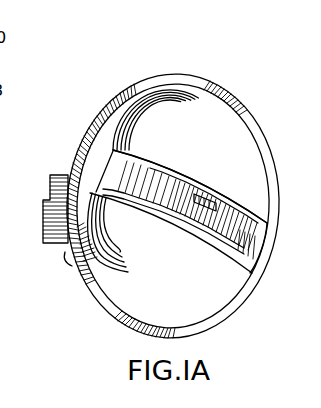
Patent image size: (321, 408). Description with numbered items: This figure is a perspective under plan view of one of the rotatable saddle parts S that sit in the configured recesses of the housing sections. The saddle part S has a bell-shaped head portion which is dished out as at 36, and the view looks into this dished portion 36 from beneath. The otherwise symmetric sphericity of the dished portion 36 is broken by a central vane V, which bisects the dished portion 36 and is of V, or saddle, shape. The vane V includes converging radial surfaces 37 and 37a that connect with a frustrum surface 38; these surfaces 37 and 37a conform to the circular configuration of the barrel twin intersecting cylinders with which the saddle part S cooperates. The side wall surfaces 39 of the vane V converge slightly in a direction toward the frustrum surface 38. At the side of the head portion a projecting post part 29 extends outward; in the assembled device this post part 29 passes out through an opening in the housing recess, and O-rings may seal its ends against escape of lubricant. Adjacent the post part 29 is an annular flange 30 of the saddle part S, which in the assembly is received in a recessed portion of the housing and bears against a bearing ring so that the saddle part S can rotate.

The saddle part S is at (197, 73).
The central vane V is at (206, 184).
The dished portion 36 is at (208, 115).
The converging radial surface 37 is at (146, 172).
The converging radial surface 37a is at (245, 226).
The frustrum surface 38 is at (192, 228).
The side wall surfaces 39 is at (191, 183).
The projecting post part 29 is at (62, 175).
The annular flange 30 is at (67, 260).